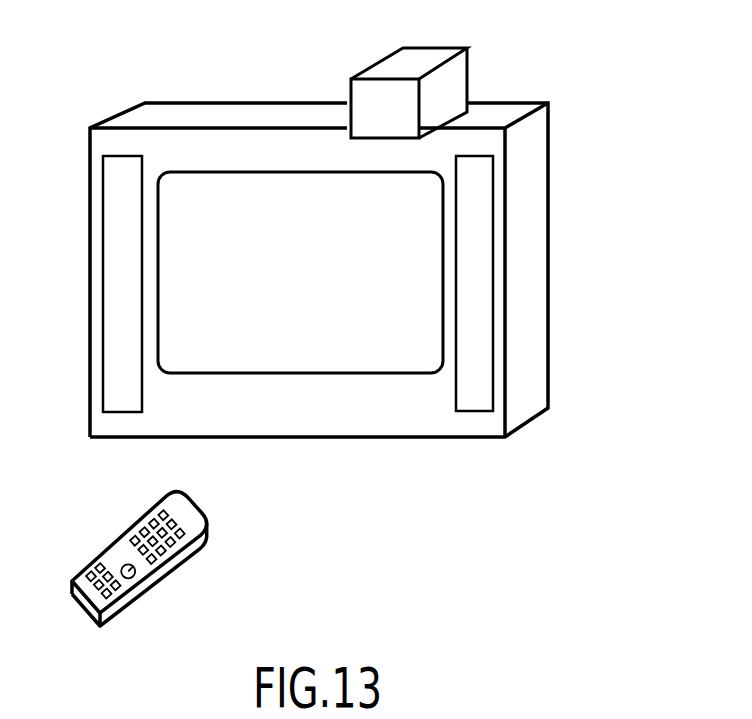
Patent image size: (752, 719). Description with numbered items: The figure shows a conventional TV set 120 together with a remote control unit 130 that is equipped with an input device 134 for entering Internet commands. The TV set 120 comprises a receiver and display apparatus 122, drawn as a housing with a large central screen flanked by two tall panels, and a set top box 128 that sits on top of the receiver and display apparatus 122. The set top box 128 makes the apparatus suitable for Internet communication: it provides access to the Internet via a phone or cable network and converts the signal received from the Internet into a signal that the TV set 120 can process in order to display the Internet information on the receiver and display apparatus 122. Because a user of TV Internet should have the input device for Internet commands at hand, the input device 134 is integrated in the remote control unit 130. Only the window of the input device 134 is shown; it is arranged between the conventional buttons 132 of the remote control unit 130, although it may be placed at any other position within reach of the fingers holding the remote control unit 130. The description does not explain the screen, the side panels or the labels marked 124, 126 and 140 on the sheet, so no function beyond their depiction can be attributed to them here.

The TV set 120 is at (660, 21).
The receiver and display apparatus 122 is at (525, 245).
The display screen 124 is at (361, 358).
The speakers 126 is at (474, 379).
The set top box 128 is at (454, 82).
The remote control unit 130 is at (145, 581).
The conventional buttons 132 is at (164, 550).
The input device 134 is at (140, 583).
The system 140 is at (658, 716).